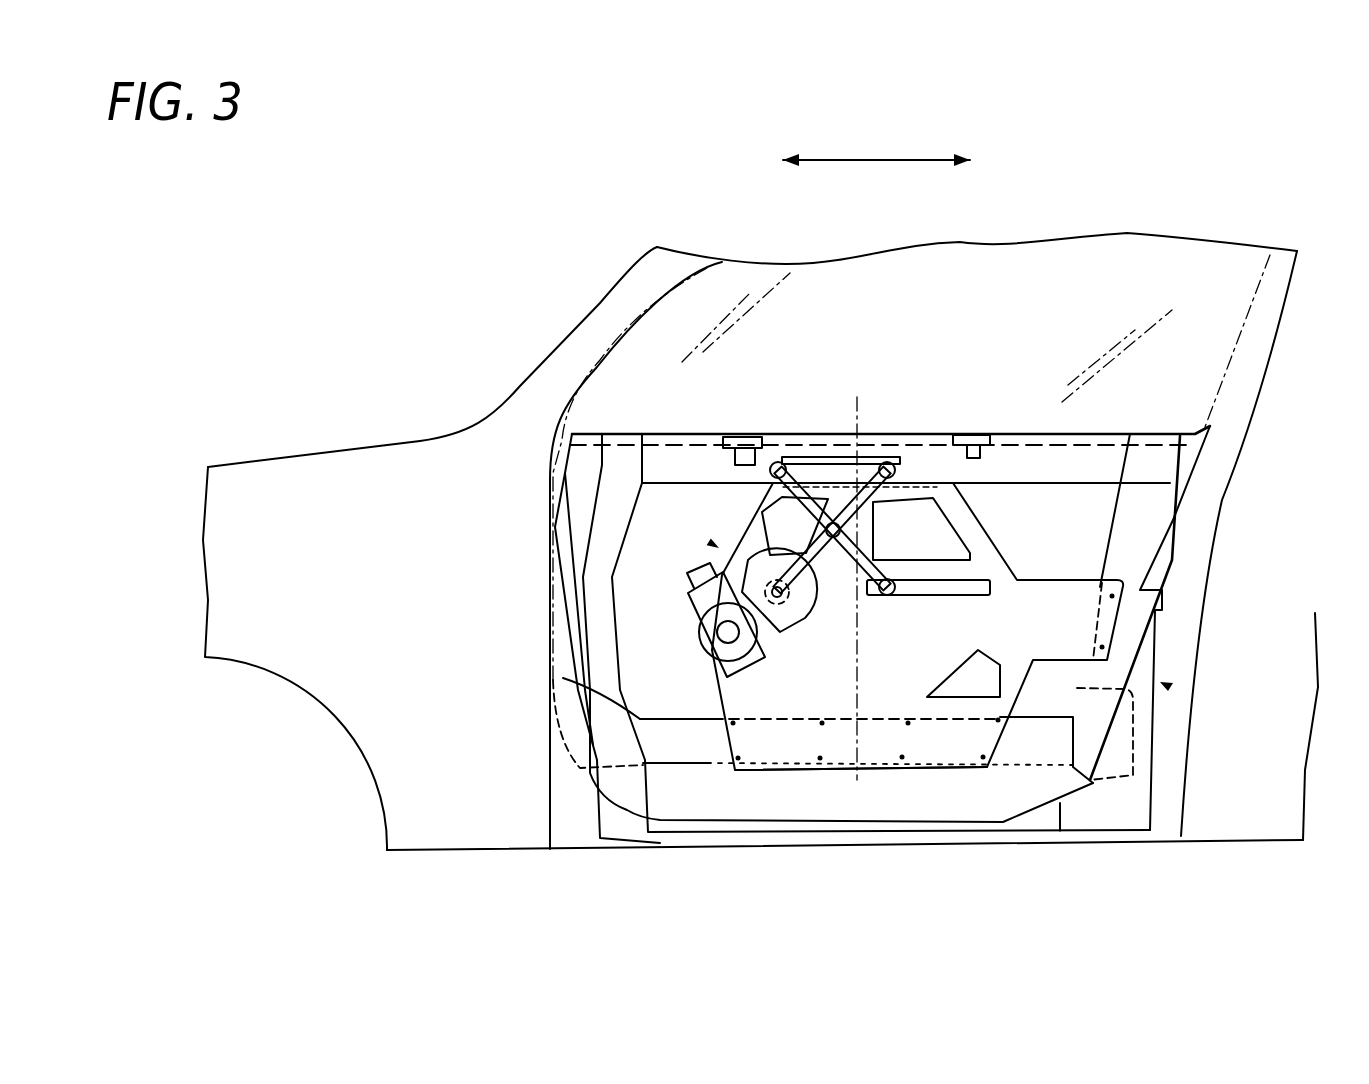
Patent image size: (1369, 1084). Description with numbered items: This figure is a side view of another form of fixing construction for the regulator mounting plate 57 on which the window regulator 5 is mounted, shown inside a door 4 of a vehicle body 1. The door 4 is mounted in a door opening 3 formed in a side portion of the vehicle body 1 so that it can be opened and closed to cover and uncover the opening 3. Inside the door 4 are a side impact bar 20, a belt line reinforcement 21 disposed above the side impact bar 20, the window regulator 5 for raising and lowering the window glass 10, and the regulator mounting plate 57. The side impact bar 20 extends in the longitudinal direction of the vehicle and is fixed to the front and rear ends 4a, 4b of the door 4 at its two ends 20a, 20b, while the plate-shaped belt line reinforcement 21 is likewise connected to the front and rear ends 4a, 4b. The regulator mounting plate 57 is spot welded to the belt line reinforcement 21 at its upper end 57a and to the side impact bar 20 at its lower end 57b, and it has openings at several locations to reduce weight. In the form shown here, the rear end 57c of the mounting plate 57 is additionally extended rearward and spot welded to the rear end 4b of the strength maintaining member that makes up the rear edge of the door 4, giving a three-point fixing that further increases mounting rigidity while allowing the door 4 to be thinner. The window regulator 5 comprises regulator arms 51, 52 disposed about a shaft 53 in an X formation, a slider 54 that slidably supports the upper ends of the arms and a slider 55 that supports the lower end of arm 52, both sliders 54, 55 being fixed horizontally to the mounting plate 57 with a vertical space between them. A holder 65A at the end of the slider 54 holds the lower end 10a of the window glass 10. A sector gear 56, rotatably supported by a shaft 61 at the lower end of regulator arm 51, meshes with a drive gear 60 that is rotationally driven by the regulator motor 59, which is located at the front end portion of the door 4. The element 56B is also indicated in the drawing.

The vehicle body 1 is at (488, 438).
The door opening 3 is at (553, 820).
The door 4 is at (1165, 684).
The front end of the door 4a is at (552, 530).
The rear end of the door 4b is at (1173, 523).
The window regulator 5 is at (716, 546).
The window glass 10 is at (1128, 257).
The lower end of the window glass 10a is at (1030, 446).
The side impact bar 20 is at (1015, 750).
The front end of the side impact bar 20a is at (550, 713).
The rear end of the side impact bar 20b is at (1120, 748).
The belt line reinforcement 21 is at (704, 463).
The regulator arm 51 is at (860, 577).
The regulator arm 52 is at (838, 458).
The shaft 53 is at (842, 533).
The slider 54 is at (962, 483).
The slider 55 is at (930, 595).
The sector gear 56 is at (787, 617).
The glass holder bracket 56B is at (975, 437).
The regulator mounting plate 57 is at (1005, 568).
The upper end of the regulator mounting plate 57a is at (874, 455).
The lower end of the regulator mounting plate 57b is at (847, 772).
The rear end of the regulator mounting plate 57c is at (1108, 620).
The regulator motor 59 is at (700, 602).
The drive gear 60 is at (703, 643).
The shaft 61 is at (785, 592).
The holder 65A is at (742, 440).